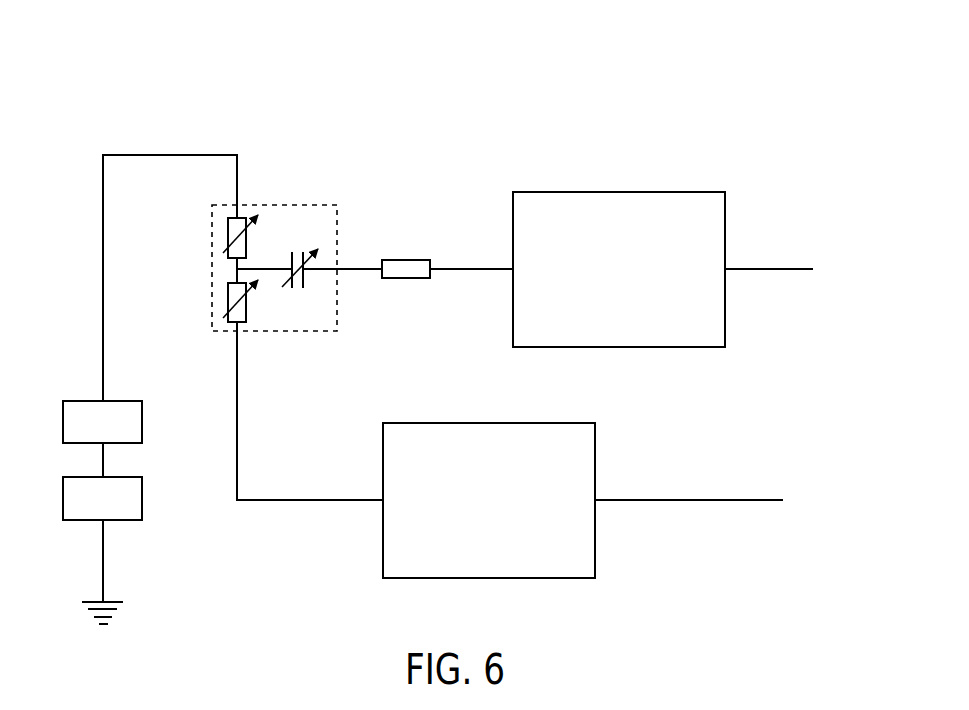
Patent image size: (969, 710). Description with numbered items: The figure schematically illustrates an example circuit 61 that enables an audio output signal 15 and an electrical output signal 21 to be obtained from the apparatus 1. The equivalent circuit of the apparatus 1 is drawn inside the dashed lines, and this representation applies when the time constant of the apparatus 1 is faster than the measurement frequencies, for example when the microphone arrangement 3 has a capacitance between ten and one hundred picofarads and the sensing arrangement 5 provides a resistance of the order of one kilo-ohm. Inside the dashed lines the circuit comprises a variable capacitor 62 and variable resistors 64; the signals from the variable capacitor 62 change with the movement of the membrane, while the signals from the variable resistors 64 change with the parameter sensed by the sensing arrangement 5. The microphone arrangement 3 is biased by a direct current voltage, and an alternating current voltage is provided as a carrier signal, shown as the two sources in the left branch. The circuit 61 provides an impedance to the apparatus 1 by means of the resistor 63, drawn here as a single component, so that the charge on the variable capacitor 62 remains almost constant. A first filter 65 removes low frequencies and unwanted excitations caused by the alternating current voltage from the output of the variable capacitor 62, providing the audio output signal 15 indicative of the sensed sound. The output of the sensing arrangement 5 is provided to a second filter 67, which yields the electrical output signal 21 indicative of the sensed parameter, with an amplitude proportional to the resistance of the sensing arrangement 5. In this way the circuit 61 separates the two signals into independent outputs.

The circuit 61 is at (448, 330).
The apparatus 1 is at (282, 233).
The variable resistors 64 is at (228, 233).
The sensing arrangement 5 is at (228, 300).
The variable capacitor 62 is at (314, 252).
The microphone arrangement 3 is at (307, 283).
The resistor 63 is at (415, 278).
The first filter 65 is at (722, 192).
The audio output signal 15 is at (790, 268).
The second filter 67 is at (595, 457).
The electrical output signal 21 is at (747, 498).